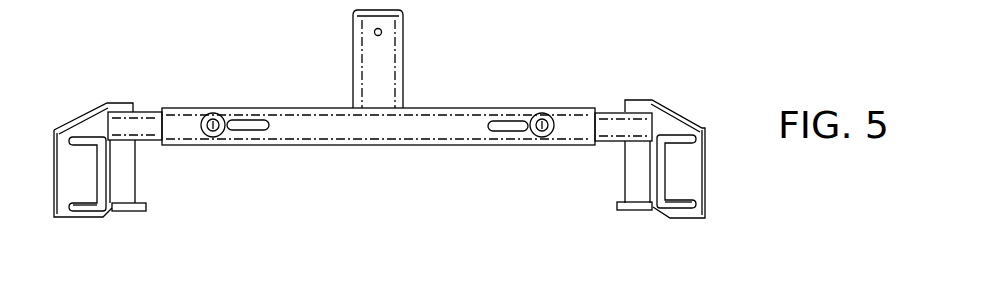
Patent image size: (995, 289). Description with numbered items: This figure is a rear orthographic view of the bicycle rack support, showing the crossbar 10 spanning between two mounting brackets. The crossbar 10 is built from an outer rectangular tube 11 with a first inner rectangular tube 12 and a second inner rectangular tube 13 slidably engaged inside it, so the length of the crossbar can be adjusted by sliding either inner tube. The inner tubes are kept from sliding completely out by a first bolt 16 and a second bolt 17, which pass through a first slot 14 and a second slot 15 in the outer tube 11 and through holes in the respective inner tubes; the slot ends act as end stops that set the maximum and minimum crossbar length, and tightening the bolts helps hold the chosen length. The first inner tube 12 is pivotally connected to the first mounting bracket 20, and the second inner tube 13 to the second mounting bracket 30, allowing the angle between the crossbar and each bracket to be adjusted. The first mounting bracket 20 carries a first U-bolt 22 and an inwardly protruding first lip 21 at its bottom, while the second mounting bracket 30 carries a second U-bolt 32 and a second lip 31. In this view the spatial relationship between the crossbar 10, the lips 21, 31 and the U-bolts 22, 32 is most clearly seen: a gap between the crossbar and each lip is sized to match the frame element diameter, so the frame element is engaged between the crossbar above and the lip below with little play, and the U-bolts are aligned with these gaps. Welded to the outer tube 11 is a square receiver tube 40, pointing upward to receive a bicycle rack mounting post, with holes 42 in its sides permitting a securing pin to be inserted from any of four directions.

The crossbar 10 is at (318, 108).
The outer rectangular tube 11 is at (433, 125).
The first inner rectangular tube 12 is at (615, 122).
The second inner rectangular tube 13 is at (147, 125).
The first slot 14 is at (498, 121).
The second slot 15 is at (247, 121).
The first bolt 16 is at (548, 117).
The second bolt 17 is at (213, 113).
The first mounting bracket 20 is at (668, 122).
The first lip 21 is at (628, 211).
The first U-bolt 22 is at (677, 209).
The second mounting bracket 30 is at (93, 123).
The second lip 31 is at (132, 209).
The second U-bolt 32 is at (80, 213).
The square receiver tube 40 is at (382, 72).
The holes 42 is at (383, 31).